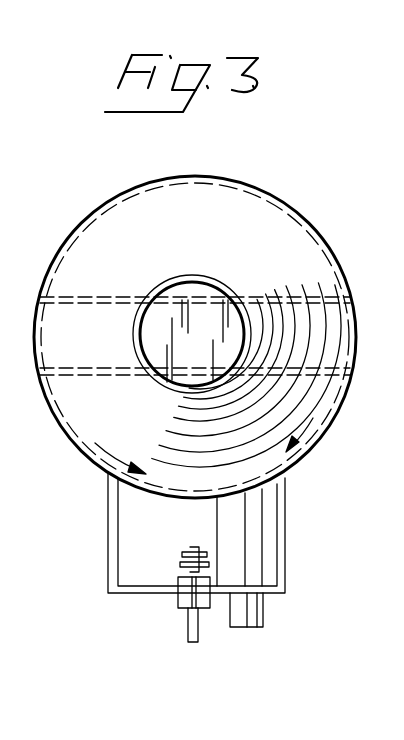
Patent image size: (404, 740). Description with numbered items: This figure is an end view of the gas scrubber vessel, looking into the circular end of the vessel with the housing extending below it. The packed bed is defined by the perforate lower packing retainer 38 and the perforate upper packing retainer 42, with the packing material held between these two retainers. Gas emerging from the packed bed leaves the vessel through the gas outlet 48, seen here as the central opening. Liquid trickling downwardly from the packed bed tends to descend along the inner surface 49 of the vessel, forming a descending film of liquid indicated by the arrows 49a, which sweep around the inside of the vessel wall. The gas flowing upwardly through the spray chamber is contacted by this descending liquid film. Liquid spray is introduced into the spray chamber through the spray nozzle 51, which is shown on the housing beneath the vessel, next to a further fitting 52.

The perforate lower packing retainer 38 is at (97, 380).
The perforate upper packing retainer 42 is at (200, 296).
The gas outlet 48 is at (188, 298).
The inner surface 49 is at (298, 238).
The arrows 49a is at (98, 448).
The spray nozzle 51 is at (176, 565).
The terminal 52 is at (265, 611).